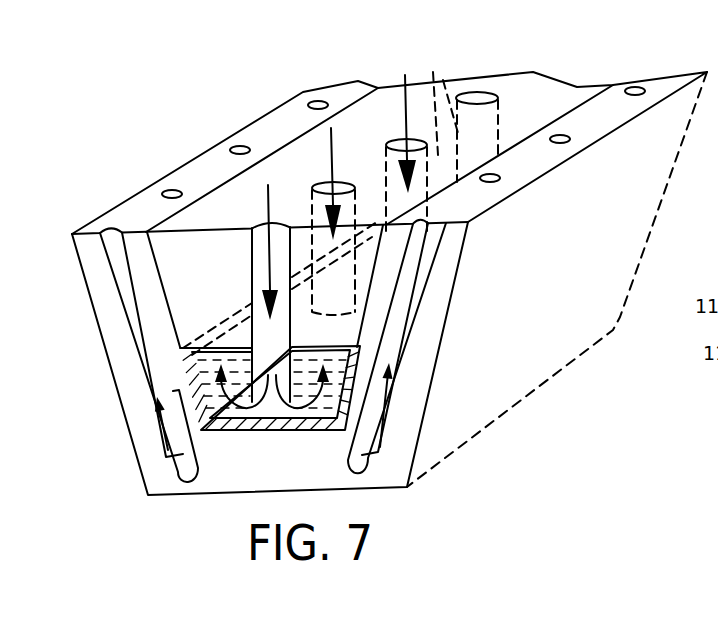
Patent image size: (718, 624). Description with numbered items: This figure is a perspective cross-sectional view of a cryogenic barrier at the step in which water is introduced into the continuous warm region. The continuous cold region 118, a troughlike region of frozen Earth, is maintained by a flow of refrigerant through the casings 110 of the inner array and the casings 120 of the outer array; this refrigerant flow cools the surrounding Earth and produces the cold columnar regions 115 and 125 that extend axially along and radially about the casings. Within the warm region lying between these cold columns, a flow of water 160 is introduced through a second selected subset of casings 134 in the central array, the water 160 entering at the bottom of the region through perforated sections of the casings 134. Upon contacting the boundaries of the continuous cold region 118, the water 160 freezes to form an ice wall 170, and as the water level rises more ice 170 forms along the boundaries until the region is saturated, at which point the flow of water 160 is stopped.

The casings 110 is at (137, 332).
The cold columnar regions 115 is at (137, 410).
The continuous cold region 118 is at (545, 434).
The casings 120 is at (402, 302).
The cold columnar regions 125 is at (418, 362).
The conduits 134 is at (222, 253).
The water 160 is at (268, 204).
The ice wall 170 is at (186, 347).